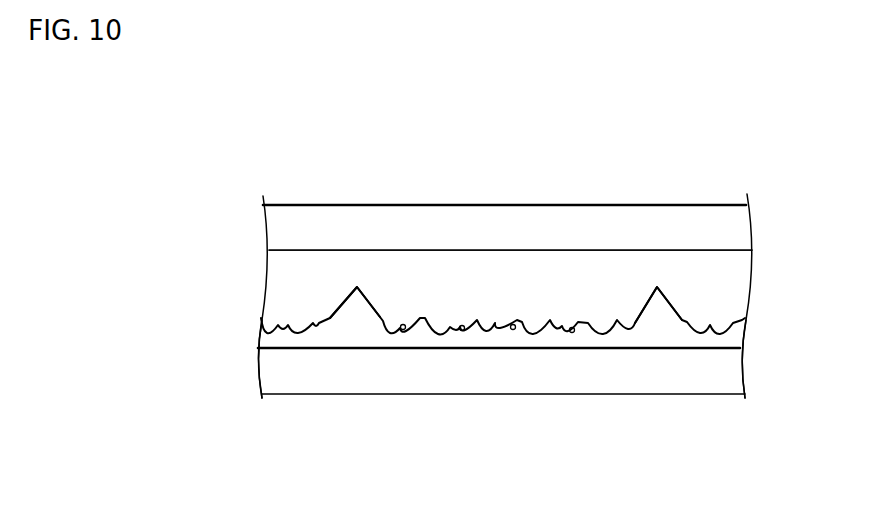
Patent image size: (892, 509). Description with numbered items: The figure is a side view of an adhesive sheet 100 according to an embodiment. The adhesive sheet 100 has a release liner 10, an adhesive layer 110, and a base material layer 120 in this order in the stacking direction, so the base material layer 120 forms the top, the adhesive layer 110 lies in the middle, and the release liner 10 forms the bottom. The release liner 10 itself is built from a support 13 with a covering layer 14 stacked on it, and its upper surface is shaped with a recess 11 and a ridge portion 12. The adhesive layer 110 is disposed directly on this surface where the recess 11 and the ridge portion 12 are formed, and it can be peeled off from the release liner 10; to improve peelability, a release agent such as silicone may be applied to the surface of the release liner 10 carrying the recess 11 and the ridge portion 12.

The adhesive sheet 100 is at (347, 132).
The base material layer 120 is at (292, 229).
The adhesive layer 110 is at (298, 287).
The release liner 10 is at (183, 330).
The covering layer 14 is at (268, 340).
The support 13 is at (268, 377).
The ridge portion 12 is at (353, 307).
The recess 11 is at (401, 333).